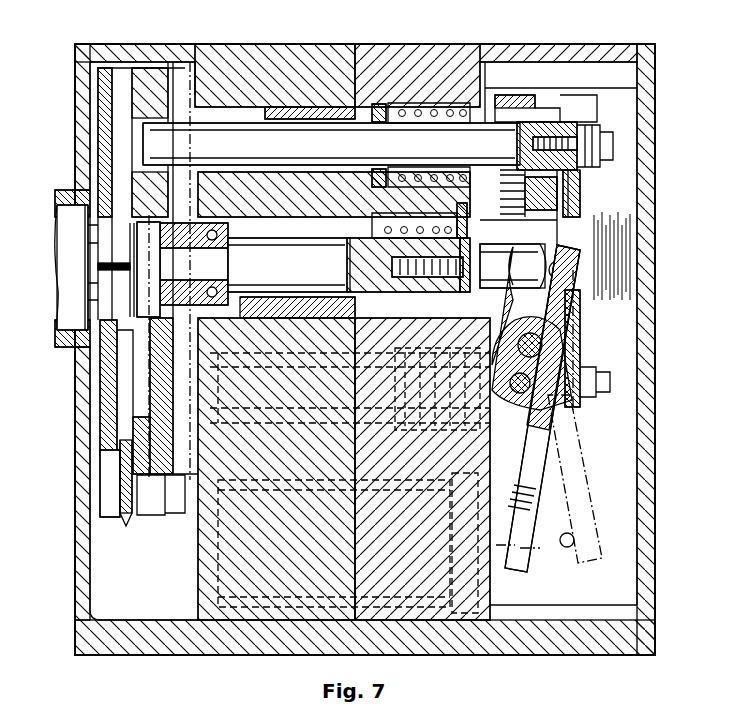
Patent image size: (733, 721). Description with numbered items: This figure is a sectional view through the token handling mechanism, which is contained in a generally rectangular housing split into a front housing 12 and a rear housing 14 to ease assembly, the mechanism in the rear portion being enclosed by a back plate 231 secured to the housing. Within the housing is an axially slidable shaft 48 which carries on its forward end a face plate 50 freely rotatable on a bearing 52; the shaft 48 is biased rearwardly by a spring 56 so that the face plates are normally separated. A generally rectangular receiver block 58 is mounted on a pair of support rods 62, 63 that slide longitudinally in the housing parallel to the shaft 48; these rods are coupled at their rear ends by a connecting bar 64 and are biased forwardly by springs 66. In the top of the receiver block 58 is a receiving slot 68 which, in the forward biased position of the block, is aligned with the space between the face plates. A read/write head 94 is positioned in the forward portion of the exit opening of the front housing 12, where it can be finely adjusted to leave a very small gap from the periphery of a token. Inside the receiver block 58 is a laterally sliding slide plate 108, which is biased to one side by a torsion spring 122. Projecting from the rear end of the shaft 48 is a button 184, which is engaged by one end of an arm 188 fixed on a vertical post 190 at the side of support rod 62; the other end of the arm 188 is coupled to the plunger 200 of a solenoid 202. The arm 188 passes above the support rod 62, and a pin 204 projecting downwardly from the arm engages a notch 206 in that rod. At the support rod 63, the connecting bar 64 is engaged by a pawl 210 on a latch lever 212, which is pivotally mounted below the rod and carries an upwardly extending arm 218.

The front housing 12 is at (180, 648).
The rear housing 14 is at (524, 650).
The shaft 48 is at (326, 277).
The face plate 50 is at (204, 320).
The bearing 52 is at (228, 250).
The spring 56 is at (352, 344).
The receiver block 58 is at (158, 78).
The support rod 62 is at (205, 422).
The support rod 63 is at (252, 140).
The connecting bar 64 is at (572, 193).
The springs 66 is at (426, 115).
The receiving slot 68 is at (208, 367).
The read/write head 94 is at (100, 280).
The slide plate 108 is at (129, 526).
The torsion spring 122 is at (118, 491).
The button 184 is at (492, 278).
The arm 188 is at (583, 498).
The vertical post 190 is at (542, 345).
The plunger 200 is at (533, 553).
The solenoid 202 is at (344, 479).
The pin 204 is at (562, 410).
The notch 206 is at (486, 480).
The pawl 210 is at (558, 100).
The latch lever 212 is at (592, 110).
The arm 218 is at (500, 92).
The back plate 231 is at (648, 545).